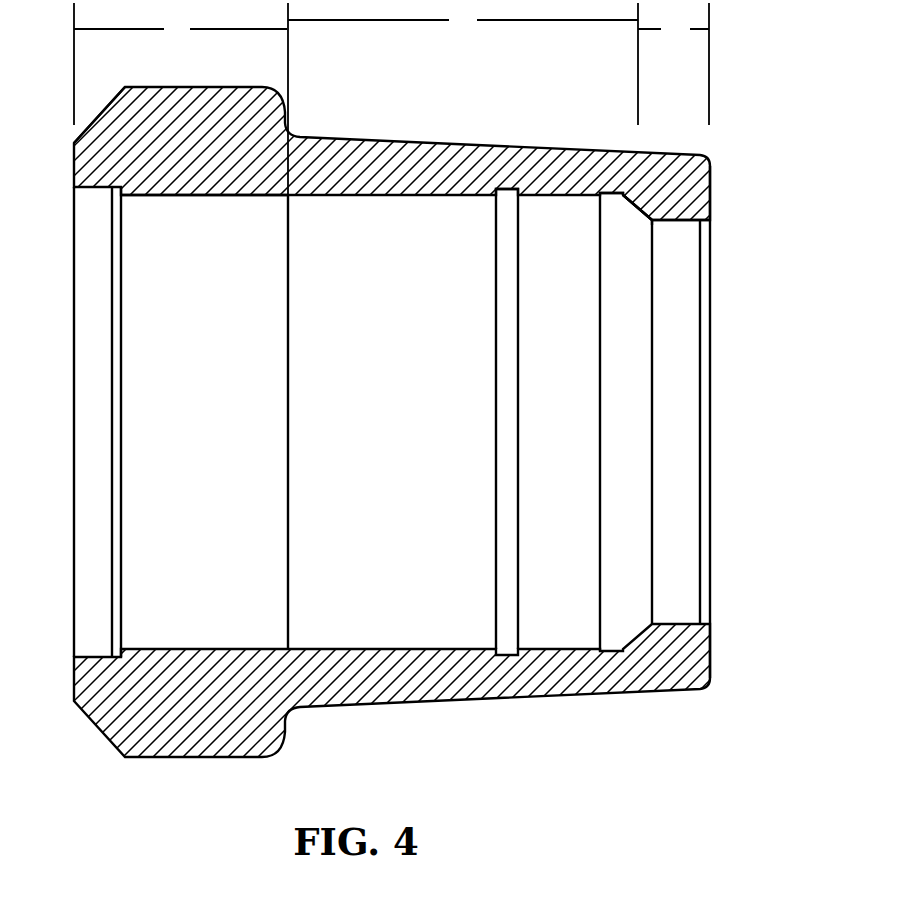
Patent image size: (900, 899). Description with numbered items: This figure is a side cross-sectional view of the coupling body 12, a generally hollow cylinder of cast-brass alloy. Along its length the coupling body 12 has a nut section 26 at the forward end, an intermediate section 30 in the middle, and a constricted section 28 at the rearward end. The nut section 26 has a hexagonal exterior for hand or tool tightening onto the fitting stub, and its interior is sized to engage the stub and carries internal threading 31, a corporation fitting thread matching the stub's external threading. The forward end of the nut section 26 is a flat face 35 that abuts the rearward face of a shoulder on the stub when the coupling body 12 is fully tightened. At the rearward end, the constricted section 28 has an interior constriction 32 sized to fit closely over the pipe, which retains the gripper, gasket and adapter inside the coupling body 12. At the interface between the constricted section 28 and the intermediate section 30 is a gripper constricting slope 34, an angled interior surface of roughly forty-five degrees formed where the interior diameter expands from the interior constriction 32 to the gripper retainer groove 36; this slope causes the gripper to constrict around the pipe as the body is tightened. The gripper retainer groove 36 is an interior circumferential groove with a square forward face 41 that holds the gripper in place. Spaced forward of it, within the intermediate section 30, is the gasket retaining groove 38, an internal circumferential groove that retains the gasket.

The coupling body 12 is at (814, 126).
The nut section 26 is at (180, 64).
The intermediate section 30 is at (463, 99).
The constricted section 28 is at (673, 64).
The flat face 35 is at (75, 168).
The internal threading 31 is at (185, 196).
The gasket retaining groove 38 is at (505, 197).
The square forward face 41 is at (601, 196).
The gripper retainer groove 36 is at (622, 197).
The gripper constricting slope 34 is at (645, 215).
The interior constriction 32 is at (677, 220).